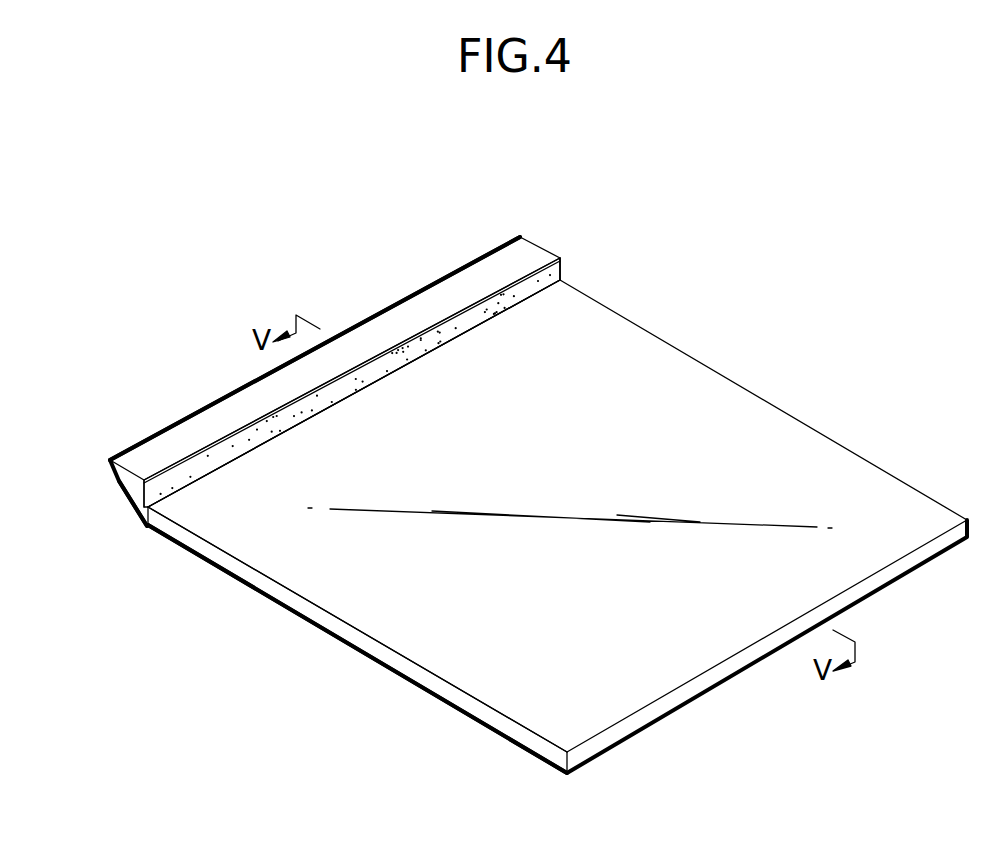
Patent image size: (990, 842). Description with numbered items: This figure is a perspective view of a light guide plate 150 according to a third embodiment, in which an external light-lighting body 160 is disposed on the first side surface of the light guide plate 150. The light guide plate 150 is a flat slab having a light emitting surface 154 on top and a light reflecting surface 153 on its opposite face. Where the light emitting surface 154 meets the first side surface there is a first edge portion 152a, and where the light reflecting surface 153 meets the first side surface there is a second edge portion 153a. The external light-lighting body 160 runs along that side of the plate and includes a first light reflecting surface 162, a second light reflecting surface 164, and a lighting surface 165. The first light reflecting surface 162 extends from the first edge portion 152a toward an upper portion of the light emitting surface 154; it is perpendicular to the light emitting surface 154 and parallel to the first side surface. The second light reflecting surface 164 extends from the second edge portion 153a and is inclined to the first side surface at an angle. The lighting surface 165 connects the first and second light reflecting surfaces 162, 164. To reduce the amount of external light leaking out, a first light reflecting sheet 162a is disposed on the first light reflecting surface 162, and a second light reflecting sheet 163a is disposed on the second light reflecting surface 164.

The light guide plate 150 is at (610, 448).
The first edge portion 152a is at (147, 527).
The light reflecting surface 153 is at (317, 630).
The second edge portion 153a is at (138, 523).
The light emitting surface 154 is at (470, 658).
The external light-lighting body 160 is at (457, 300).
The first light reflecting surface 162 is at (143, 500).
The first light reflecting sheet 162a is at (548, 277).
The second light reflecting sheet 163a is at (127, 453).
The second light reflecting surface 164 is at (108, 473).
The lighting surface 165 is at (220, 412).